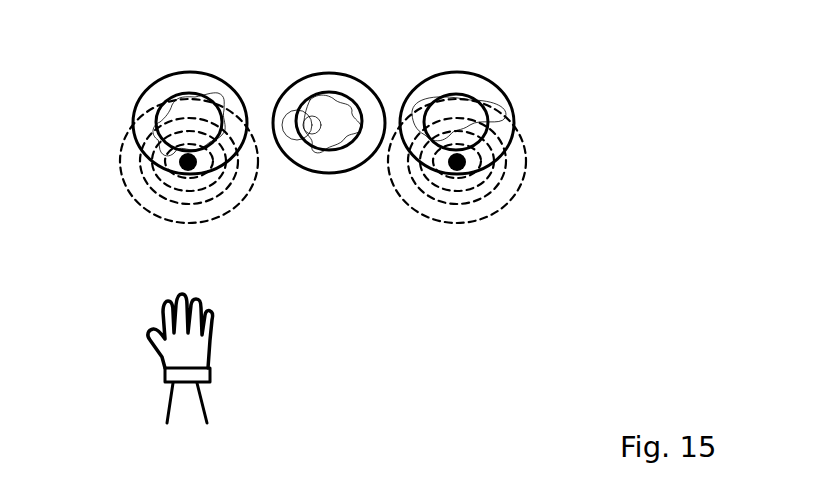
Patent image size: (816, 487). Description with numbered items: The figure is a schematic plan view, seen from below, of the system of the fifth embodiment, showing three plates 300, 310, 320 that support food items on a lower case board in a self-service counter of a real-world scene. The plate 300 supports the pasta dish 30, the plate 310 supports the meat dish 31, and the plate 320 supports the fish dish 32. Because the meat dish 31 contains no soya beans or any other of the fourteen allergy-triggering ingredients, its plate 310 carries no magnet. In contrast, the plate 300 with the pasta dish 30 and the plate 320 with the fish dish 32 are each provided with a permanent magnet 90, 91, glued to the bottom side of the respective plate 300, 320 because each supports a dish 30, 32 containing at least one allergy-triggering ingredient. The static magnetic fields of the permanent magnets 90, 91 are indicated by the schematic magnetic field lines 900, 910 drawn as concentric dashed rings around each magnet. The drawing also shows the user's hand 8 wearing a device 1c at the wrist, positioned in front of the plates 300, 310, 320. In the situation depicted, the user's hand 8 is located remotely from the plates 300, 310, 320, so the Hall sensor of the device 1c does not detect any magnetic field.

The plate 300 is at (193, 72).
The pasta dish 30 is at (217, 88).
The permanent magnet 90 is at (180, 162).
The magnetic field lines 900 is at (217, 173).
The plate 310 is at (325, 73).
The meat dish 31 is at (367, 110).
The plate 320 is at (452, 72).
The fish dish 32 is at (472, 105).
The permanent magnet 91 is at (464, 161).
The magnetic field lines 910 is at (487, 173).
The hand of user 8 is at (205, 344).
The wearable device 1c is at (210, 377).